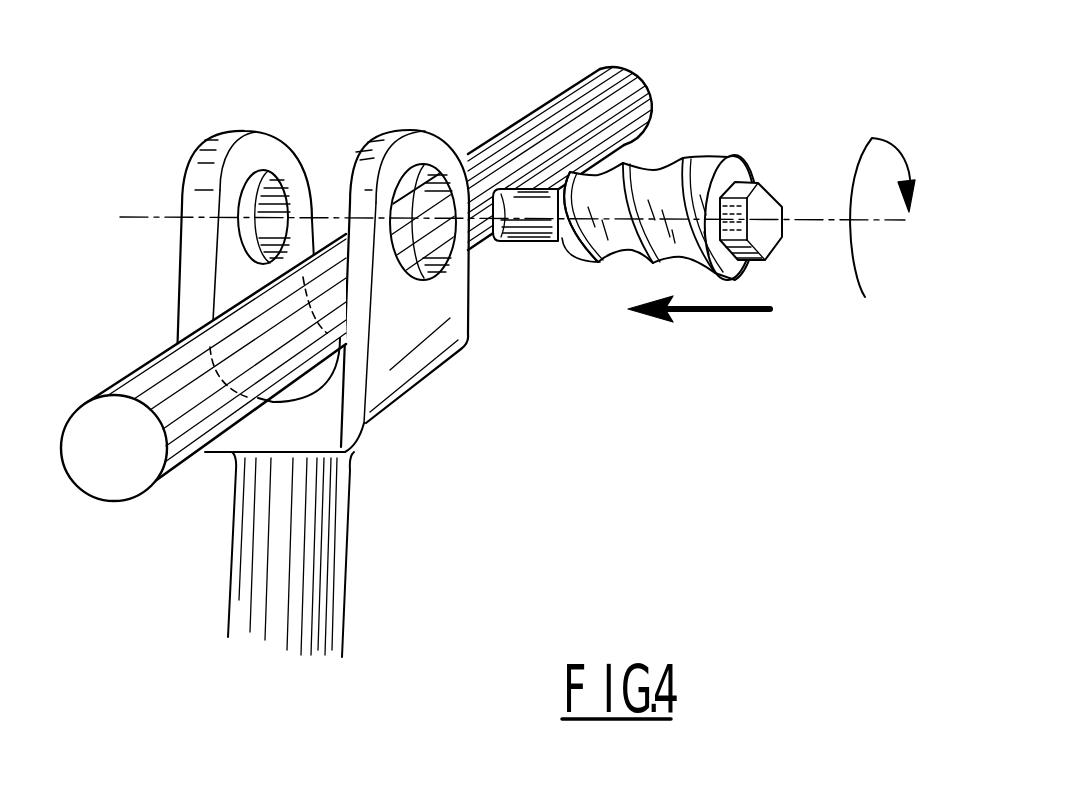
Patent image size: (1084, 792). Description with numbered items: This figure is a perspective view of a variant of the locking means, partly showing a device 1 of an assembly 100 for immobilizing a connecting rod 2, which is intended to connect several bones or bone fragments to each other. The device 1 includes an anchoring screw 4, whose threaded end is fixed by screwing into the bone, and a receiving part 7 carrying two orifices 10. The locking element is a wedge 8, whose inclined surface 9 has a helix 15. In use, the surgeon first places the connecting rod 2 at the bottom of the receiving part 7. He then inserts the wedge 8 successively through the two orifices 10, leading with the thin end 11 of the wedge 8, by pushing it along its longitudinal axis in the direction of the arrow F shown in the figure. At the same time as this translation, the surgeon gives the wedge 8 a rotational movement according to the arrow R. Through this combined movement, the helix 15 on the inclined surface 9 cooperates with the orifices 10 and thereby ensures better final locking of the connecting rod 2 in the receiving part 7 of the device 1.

The device 1 is at (292, 332).
The connecting rod 2 is at (120, 448).
The anchoring screw 4 is at (242, 532).
The receiving part 7 is at (180, 326).
The wedge 8 is at (634, 238).
The inclined surface 9 is at (703, 262).
The orifices 10 is at (258, 208).
The thin end 11 is at (533, 225).
The helix 15 is at (571, 261).
The assembly 100 is at (488, 328).